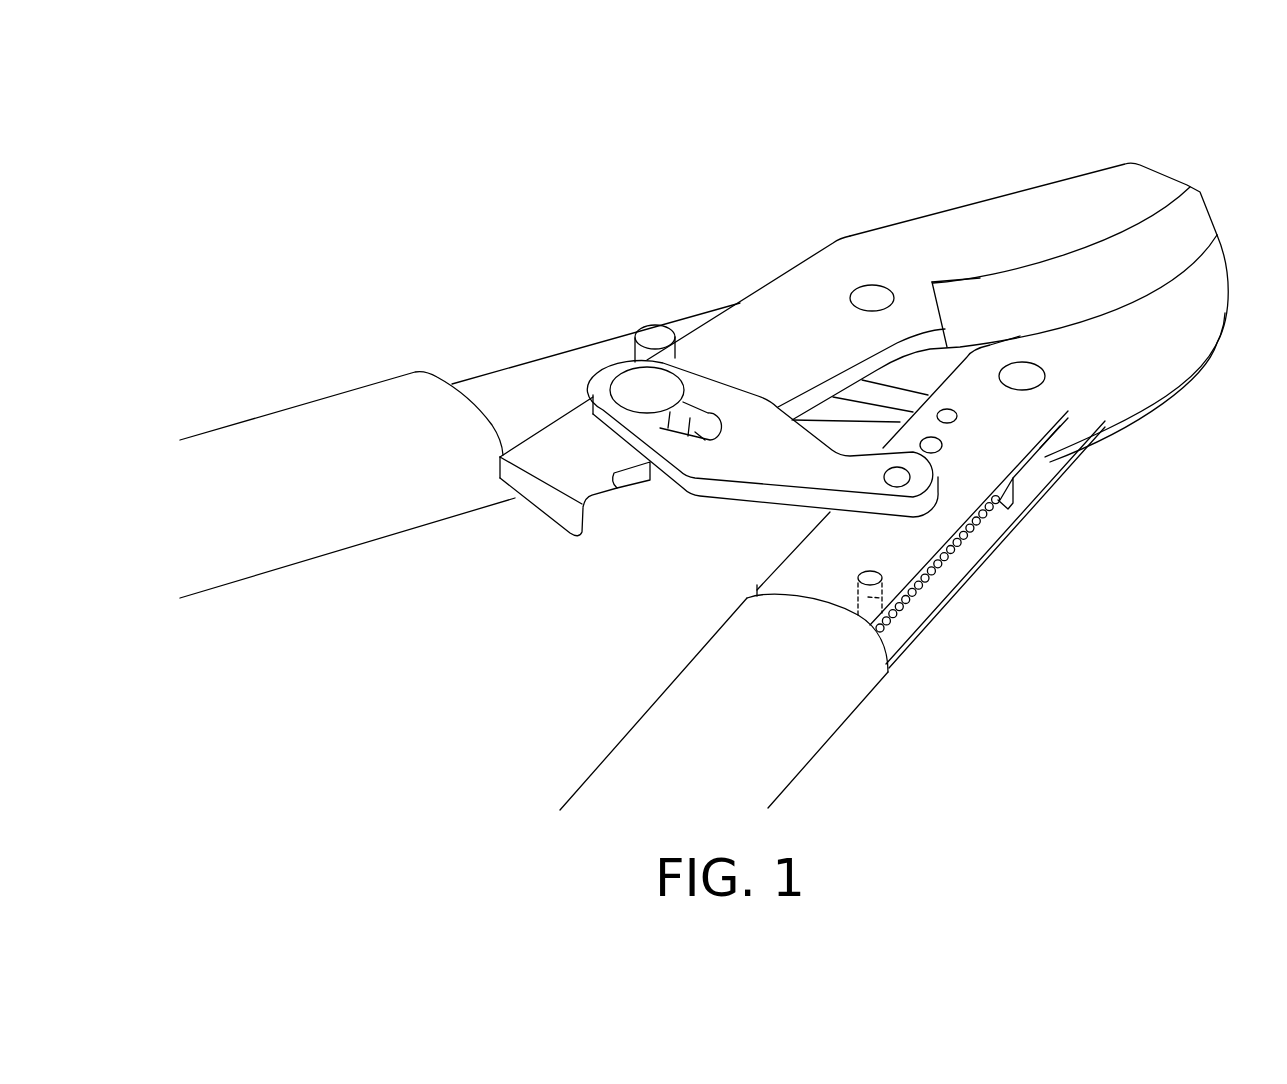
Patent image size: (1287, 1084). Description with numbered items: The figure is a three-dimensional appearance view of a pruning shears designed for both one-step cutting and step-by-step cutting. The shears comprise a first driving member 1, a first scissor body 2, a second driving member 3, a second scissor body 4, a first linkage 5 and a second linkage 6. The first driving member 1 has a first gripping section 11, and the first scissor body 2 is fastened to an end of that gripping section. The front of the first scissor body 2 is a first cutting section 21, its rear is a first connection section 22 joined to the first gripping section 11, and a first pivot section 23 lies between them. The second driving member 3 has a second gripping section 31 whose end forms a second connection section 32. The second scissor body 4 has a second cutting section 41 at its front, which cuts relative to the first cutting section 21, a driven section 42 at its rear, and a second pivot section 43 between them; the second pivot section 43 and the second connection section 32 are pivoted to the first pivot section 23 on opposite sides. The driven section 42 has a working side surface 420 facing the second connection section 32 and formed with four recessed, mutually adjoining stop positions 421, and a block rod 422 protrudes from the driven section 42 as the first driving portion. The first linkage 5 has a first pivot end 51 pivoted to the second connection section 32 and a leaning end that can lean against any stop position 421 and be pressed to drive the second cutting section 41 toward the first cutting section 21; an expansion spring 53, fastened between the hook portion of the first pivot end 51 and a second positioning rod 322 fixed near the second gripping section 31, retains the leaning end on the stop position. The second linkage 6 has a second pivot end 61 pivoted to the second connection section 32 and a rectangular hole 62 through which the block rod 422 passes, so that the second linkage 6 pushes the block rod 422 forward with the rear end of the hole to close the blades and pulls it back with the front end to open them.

The first driving member 1 is at (347, 455).
The first gripping section 11 is at (328, 532).
The first scissor body 2 is at (858, 373).
The first cutting section 21 is at (1188, 348).
The first connection section 22 is at (528, 387).
The first pivot section 23 is at (910, 372).
The second driving member 3 is at (839, 610).
The second gripping section 31 is at (663, 728).
The second connection section 32 is at (1002, 539).
The second positioning rod 322 is at (903, 613).
The second scissor body 4 is at (836, 358).
The second cutting section 41 is at (1023, 210).
The driven section 42 is at (577, 512).
The working side surface 420 is at (648, 506).
The stop position 421 is at (602, 500).
The block rod 422 is at (633, 383).
The second pivot section 43 is at (817, 267).
The first linkage 5 is at (853, 430).
The first pivot end 51 is at (1010, 492).
The expansion spring 53 is at (967, 538).
The second linkage 6 is at (795, 441).
The second pivot end 61 is at (923, 473).
The rectangular hole 62 is at (693, 395).